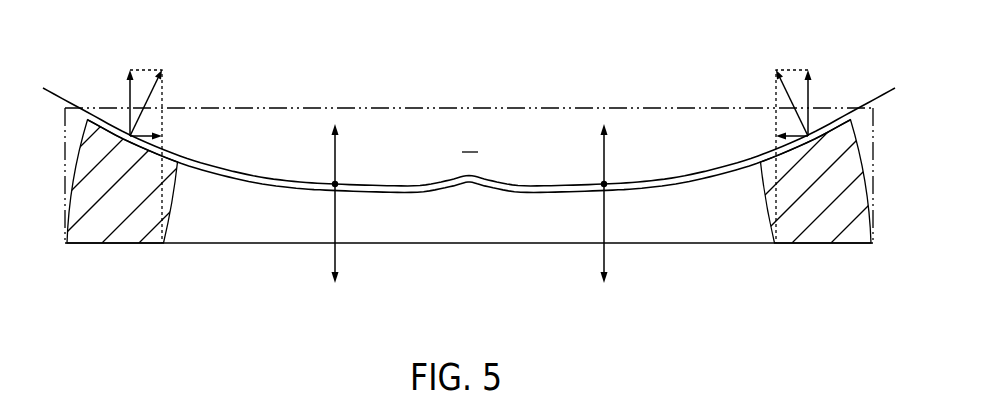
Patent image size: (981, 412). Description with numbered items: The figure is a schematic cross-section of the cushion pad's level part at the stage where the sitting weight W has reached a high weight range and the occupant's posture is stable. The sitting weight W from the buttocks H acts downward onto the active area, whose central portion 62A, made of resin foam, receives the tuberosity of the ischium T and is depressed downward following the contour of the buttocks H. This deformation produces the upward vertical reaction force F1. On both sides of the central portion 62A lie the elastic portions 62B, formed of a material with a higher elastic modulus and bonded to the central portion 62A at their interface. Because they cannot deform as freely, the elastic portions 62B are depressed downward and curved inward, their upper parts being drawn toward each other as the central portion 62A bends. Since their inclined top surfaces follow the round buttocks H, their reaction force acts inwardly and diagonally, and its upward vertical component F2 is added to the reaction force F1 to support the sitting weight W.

The central portion 62A is at (450, 232).
The elastic portion 62B is at (115, 213).
The upward reaction force F1 is at (469, 153).
The upward vertical force component F2 is at (468, 140).
The tuberosity of the ischium T is at (337, 184).
The sitting weight W is at (469, 249).
The buttocks H is at (470, 140).